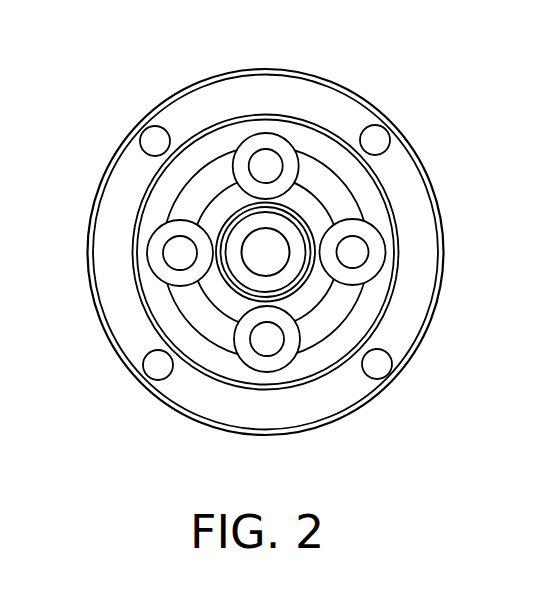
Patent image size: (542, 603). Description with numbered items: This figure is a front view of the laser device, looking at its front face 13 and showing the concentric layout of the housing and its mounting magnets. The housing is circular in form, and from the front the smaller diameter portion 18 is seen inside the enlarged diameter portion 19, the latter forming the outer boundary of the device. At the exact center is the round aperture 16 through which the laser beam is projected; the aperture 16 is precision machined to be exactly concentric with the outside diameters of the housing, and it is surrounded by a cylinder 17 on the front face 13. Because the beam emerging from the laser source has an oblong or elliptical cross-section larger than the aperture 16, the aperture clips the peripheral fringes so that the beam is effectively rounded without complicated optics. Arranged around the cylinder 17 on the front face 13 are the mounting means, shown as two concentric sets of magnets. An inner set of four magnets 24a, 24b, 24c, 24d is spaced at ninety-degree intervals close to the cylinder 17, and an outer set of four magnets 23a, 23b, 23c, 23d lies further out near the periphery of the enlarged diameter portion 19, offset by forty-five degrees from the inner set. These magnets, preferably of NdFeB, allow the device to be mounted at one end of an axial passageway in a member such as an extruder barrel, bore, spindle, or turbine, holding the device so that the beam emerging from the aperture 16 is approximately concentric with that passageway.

The front face 13 is at (117, 183).
The round aperture 16 is at (272, 265).
The cylinder 17 is at (302, 217).
The smaller diameter portion 18 is at (327, 132).
The enlarged diameter portion 19 is at (313, 72).
The outer set magnet 23a is at (152, 140).
The outer set magnet 23b is at (158, 366).
The outer set magnet 23c is at (380, 367).
The outer set magnet 23d is at (378, 140).
The inner set magnet 24a is at (176, 253).
The inner set magnet 24b is at (268, 343).
The inner set magnet 24c is at (358, 250).
The inner set magnet 24d is at (264, 160).